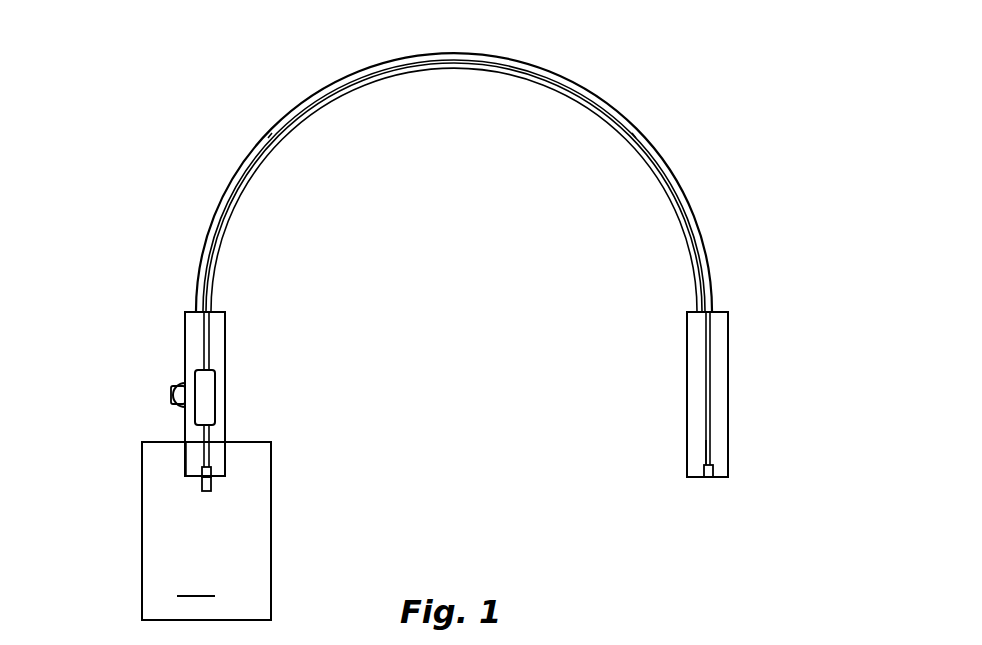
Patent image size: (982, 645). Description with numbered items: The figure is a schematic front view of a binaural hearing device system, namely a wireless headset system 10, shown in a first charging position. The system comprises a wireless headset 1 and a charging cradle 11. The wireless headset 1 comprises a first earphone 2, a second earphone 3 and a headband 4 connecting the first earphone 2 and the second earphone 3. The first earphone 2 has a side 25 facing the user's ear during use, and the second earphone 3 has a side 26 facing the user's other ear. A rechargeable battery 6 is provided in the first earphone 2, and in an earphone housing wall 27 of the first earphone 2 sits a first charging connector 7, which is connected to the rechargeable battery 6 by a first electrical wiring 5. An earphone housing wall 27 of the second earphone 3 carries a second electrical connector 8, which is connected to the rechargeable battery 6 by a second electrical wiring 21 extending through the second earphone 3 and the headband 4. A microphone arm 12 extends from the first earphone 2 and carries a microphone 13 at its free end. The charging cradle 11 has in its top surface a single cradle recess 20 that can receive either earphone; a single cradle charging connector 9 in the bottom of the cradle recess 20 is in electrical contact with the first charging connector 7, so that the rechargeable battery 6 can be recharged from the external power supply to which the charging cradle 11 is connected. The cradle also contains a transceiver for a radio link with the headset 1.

The wireless headset 1 is at (728, 158).
The wireless headset system 10 is at (130, 180).
The first earphone 2 is at (218, 338).
The second earphone 3 is at (695, 335).
The headband 4 is at (588, 107).
The first electrical wiring 5 is at (212, 455).
The rechargeable battery 6 is at (205, 398).
The first charging connector 7 is at (200, 470).
The second electrical connector 8 is at (709, 477).
The cradle charging connector 9 is at (212, 487).
The charging cradle 11 is at (206, 531).
The microphone arm 12 is at (172, 391).
The microphone 13 is at (165, 390).
The cradle recess 20 is at (195, 445).
The second electrical wiring 21 is at (707, 333).
The side 25 is at (226, 372).
The side 26 is at (685, 437).
The earphone housing wall 27 is at (195, 478).